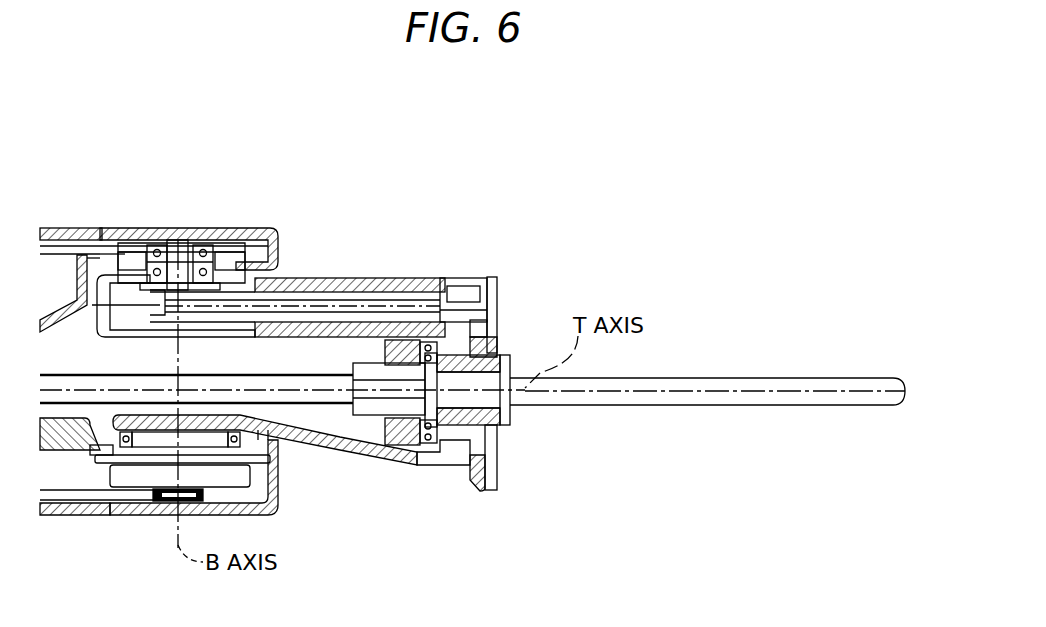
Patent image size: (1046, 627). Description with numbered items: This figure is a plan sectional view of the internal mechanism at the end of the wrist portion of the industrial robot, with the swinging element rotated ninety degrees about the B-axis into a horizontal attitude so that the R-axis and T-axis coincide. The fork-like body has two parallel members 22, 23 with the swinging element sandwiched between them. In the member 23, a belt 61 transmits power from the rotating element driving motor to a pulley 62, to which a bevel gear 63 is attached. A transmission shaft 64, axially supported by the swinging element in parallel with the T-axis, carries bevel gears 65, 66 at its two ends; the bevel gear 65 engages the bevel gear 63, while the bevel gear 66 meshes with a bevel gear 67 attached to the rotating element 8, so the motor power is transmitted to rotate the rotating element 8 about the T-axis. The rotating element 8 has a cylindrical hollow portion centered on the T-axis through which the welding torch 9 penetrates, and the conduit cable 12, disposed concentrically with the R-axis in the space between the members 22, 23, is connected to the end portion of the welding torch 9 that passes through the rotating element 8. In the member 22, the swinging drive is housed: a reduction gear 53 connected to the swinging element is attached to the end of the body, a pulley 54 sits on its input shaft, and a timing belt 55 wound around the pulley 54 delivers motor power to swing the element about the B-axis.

The belt 61 is at (76, 242).
The member 23 is at (272, 232).
The pulley 62 is at (232, 243).
The bevel gear 63 is at (187, 238).
The bevel gear 65 is at (153, 313).
The transmission shaft 64 is at (343, 303).
The bevel gear 66 is at (458, 284).
The bevel gear 67 is at (472, 322).
The conduit cable 12 is at (303, 385).
The rotating element 8 is at (505, 356).
The welding torch 9 is at (610, 401).
The member 22 is at (277, 463).
The reduction gear 53 is at (233, 484).
The pulley 54 is at (160, 512).
The timing belt 55 is at (77, 500).